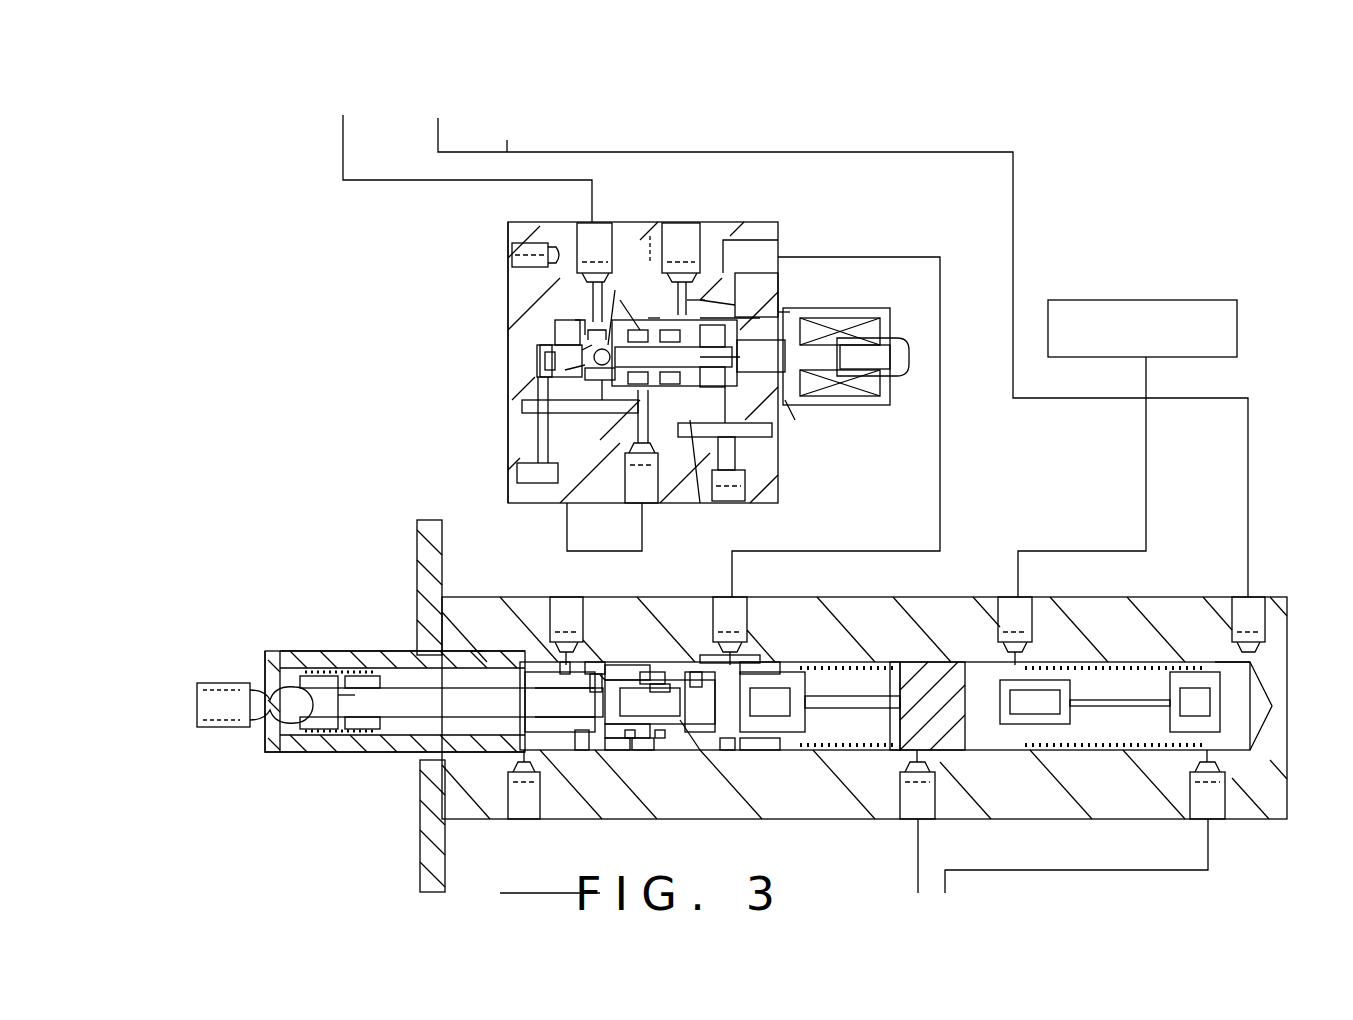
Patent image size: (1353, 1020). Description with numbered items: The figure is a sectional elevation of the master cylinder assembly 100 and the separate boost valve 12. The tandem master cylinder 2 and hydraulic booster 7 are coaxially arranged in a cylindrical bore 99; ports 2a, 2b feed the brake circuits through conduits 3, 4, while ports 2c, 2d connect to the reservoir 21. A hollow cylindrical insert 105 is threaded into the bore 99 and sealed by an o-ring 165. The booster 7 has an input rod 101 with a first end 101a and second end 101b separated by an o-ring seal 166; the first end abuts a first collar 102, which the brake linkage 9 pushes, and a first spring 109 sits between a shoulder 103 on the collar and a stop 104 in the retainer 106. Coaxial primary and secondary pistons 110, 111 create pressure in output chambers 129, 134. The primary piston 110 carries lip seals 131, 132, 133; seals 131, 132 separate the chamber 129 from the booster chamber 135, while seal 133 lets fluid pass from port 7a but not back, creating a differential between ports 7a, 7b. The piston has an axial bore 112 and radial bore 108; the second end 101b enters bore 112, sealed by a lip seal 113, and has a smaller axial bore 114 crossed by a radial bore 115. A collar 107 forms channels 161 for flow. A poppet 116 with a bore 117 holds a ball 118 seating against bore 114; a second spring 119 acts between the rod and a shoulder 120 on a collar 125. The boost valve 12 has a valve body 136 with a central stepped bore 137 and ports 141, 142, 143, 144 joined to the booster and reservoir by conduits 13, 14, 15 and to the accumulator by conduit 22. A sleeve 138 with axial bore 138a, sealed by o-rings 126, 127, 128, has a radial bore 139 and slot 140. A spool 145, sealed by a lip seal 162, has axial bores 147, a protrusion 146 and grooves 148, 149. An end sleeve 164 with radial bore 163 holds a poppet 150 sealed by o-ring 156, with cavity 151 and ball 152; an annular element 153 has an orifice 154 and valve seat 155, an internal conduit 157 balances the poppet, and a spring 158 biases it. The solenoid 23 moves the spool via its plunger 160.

The tandem master cylinder 2 is at (830, 590).
The port 2a is at (910, 820).
The port 2b is at (1215, 810).
The port 2c is at (1255, 597).
The port 2d is at (1028, 597).
The conduit 3 is at (918, 845).
The conduit 4 is at (1070, 870).
The hydraulic booster 7 is at (726, 554).
The booster port 7a is at (568, 597).
The booster port 7b is at (748, 597).
The brake linkage 9 is at (238, 686).
The boost valve 12 is at (410, 356).
The conduit 13 is at (940, 457).
The conduit 14 is at (568, 550).
The conduit 15 is at (828, 154).
The reservoir 21 is at (1130, 300).
The conduit 22 is at (410, 182).
The solenoid 23 is at (875, 312).
The cylindrical bore 99 is at (700, 662).
The master cylinder assembly 100 is at (408, 552).
The input rod 101 is at (443, 715).
The first end 101a is at (344, 704).
The second end 101b is at (648, 665).
The first collar 102 is at (307, 652).
The shoulder 103 is at (390, 650).
The stop 104 is at (310, 752).
The hollow cylindrical insert 105 is at (343, 752).
The retainer 106 is at (275, 755).
The collar 107 is at (572, 760).
The radial bore 108 is at (695, 750).
The first spring 109 is at (335, 652).
The primary piston 110 is at (618, 750).
The secondary piston 111 is at (940, 750).
The axial bore 112 is at (628, 750).
The lip seal 113 is at (640, 750).
The smaller axial bore 114 is at (582, 750).
The radial bore 115 is at (598, 674).
The poppet 116 is at (661, 701).
The bore 117 is at (660, 684).
The ball 118 is at (652, 672).
The second spring 119 is at (660, 750).
The shoulder 120 is at (715, 738).
The collar 125 is at (785, 750).
The o-ring 126 is at (618, 330).
The o-ring 127 is at (684, 250).
The o-ring 128 is at (740, 262).
The primary output chamber 129 is at (850, 665).
The first lip seal 131 is at (790, 664).
The second lip seal 132 is at (748, 662).
The third lip seal 133 is at (595, 662).
The output chamber 134 is at (1178, 597).
The booster chamber 135 is at (735, 752).
The valve body 136 is at (508, 280).
The central stepped bore 137 is at (695, 300).
The hollow cylindrical sleeve 138 is at (745, 440).
The axial bore 138a is at (760, 268).
The radial bore 139 is at (645, 335).
The slot 140 is at (722, 300).
The port 141 is at (790, 270).
The port 142 is at (633, 503).
The port 143 is at (686, 222).
The port 144 is at (602, 220).
The cylindrical spool 145 is at (725, 343).
The coaxial protrusion 146 is at (640, 395).
The axial bores 147 is at (745, 475).
The annular groove 148 is at (700, 490).
The annular groove 149 is at (775, 420).
The poppet 150 is at (590, 357).
The cavity 151 is at (583, 345).
The ball 152 is at (588, 336).
The annular element 153 is at (600, 400).
The central orifice 154 is at (612, 300).
The valve seat 155 is at (585, 320).
The o-ring 156 is at (583, 357).
The internal conduit 157 is at (585, 362).
The spring 158 is at (598, 377).
The plunger 160 is at (793, 312).
The channels 161 is at (596, 710).
The lip seal 162 is at (735, 370).
The radial bore 163 is at (598, 375).
The end sleeve 164 is at (588, 367).
The o-ring 165 is at (495, 650).
The o-ring seal 166 is at (565, 660).